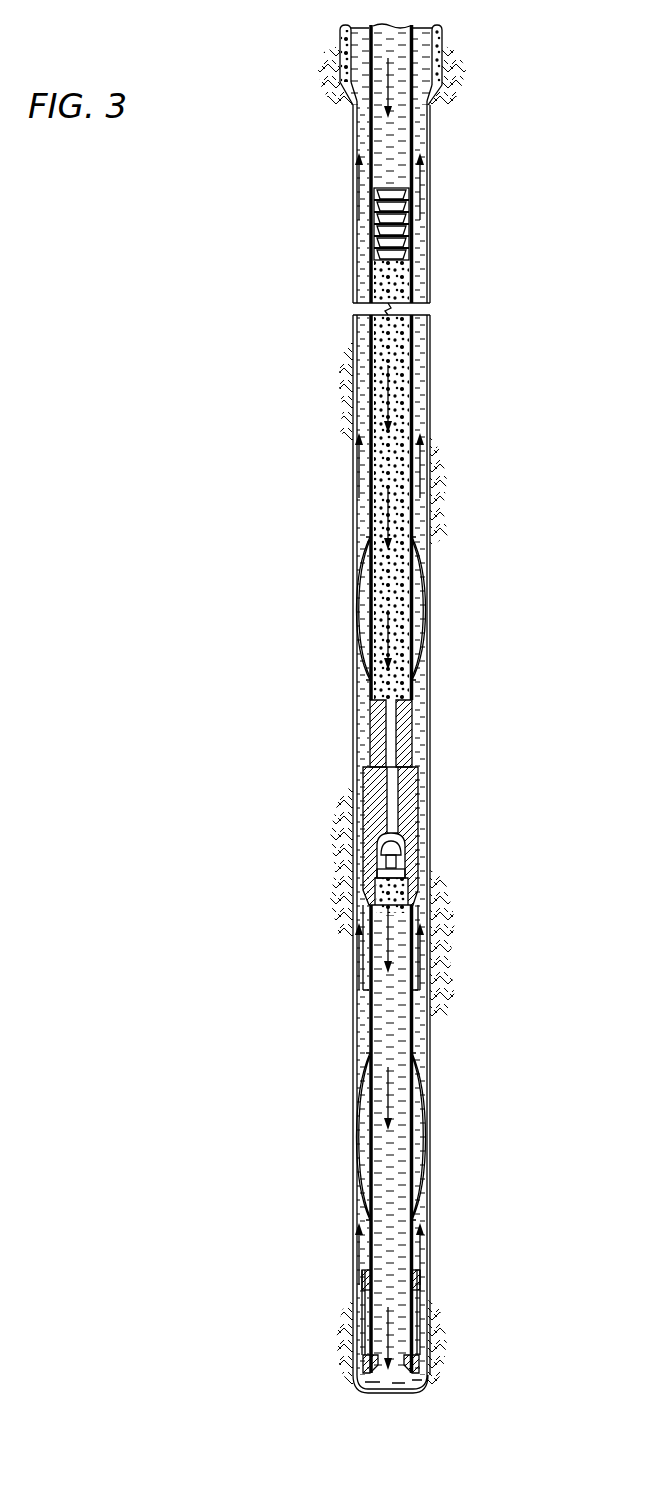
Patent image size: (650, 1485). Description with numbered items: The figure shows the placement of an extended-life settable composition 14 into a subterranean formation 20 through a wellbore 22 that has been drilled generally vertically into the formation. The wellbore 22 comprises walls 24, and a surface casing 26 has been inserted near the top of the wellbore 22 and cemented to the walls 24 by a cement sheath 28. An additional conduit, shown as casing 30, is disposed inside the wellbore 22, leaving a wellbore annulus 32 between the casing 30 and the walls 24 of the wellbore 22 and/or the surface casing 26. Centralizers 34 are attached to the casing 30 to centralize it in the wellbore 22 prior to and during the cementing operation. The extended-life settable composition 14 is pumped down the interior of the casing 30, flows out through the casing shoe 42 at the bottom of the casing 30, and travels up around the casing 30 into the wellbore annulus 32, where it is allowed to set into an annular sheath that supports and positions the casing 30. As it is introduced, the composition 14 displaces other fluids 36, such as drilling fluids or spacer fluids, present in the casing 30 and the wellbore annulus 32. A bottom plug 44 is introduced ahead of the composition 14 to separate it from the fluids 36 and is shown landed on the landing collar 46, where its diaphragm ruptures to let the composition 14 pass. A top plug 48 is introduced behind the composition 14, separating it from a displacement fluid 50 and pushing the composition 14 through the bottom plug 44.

The extended-life settable composition 14 is at (388, 390).
The subterranean formation 20 is at (543, 712).
The wellbore 22 is at (436, 535).
The walls 24 is at (420, 250).
The surface casing 26 is at (440, 37).
The cement sheath 28 is at (437, 57).
The casing 30 is at (415, 418).
The wellbore annulus 32 is at (362, 510).
The centralizers 34 is at (360, 1113).
The fluids 36 is at (392, 913).
The casing shoe 42 is at (362, 1313).
The bottom plug 44 is at (370, 722).
The landing collar 46 is at (360, 800).
The top plug 48 is at (367, 245).
The displacement fluid 50 is at (432, 87).